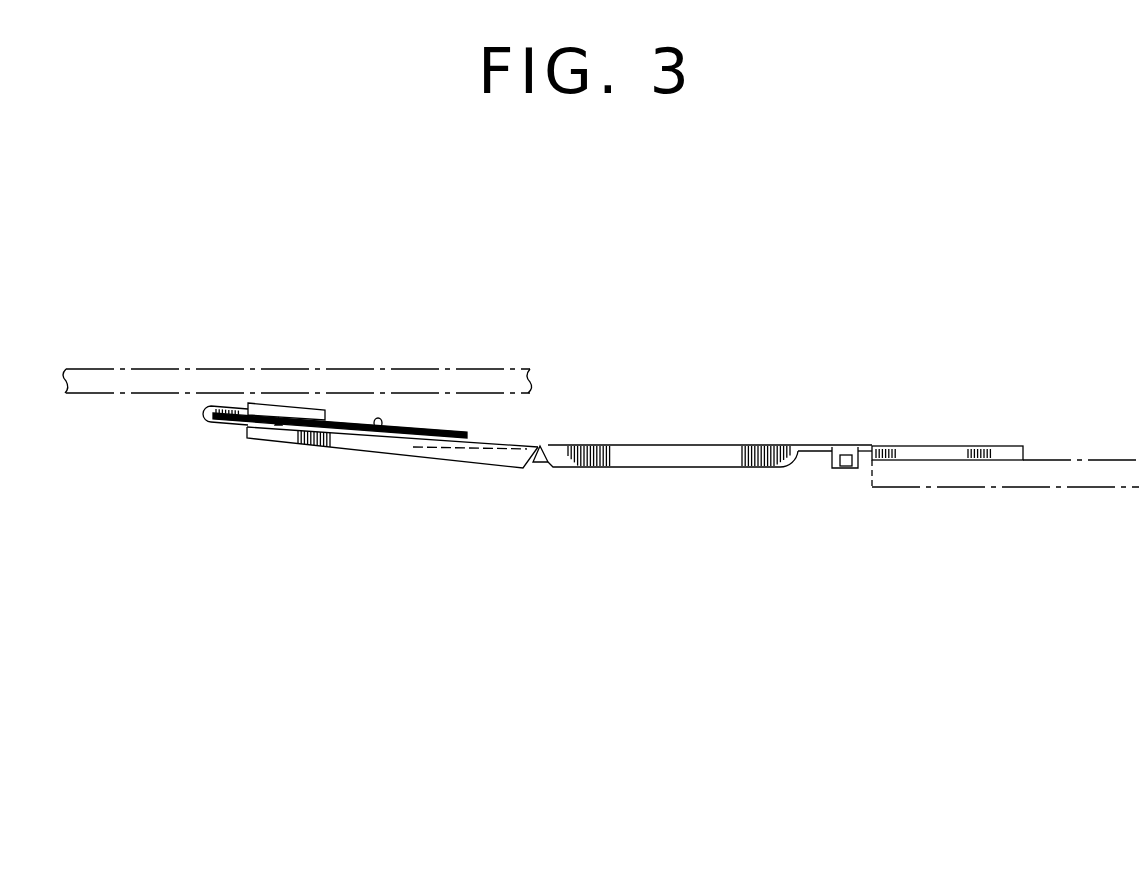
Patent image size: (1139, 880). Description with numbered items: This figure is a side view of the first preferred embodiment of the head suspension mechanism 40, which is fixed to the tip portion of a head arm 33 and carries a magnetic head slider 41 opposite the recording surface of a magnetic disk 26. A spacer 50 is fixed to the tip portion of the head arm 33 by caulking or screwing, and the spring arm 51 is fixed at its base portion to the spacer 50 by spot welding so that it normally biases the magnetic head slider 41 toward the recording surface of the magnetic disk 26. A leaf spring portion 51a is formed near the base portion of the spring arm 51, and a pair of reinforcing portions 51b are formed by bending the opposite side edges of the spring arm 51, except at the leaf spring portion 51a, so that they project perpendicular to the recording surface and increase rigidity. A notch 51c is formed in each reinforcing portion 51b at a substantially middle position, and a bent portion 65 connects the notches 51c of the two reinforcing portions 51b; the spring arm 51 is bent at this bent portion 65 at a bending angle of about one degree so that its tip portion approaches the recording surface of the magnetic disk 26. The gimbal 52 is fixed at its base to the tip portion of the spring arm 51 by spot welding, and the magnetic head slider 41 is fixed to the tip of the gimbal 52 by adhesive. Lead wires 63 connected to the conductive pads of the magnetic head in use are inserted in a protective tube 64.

The magnetic disk 26 is at (393, 368).
The magnetic head slider 41 is at (298, 407).
The lead wires 63 is at (206, 418).
The gimbal 52 is at (382, 428).
The spring arm 51 is at (805, 444).
The leaf spring portion 51a is at (866, 445).
The reinforcing portions 51b is at (708, 458).
The notch 51c is at (540, 463).
The bent portion 65 is at (541, 446).
The head suspension mechanism 40 is at (653, 476).
The protective tube 64 is at (817, 460).
The spacer 50 is at (955, 445).
The head arm 33 is at (1047, 477).